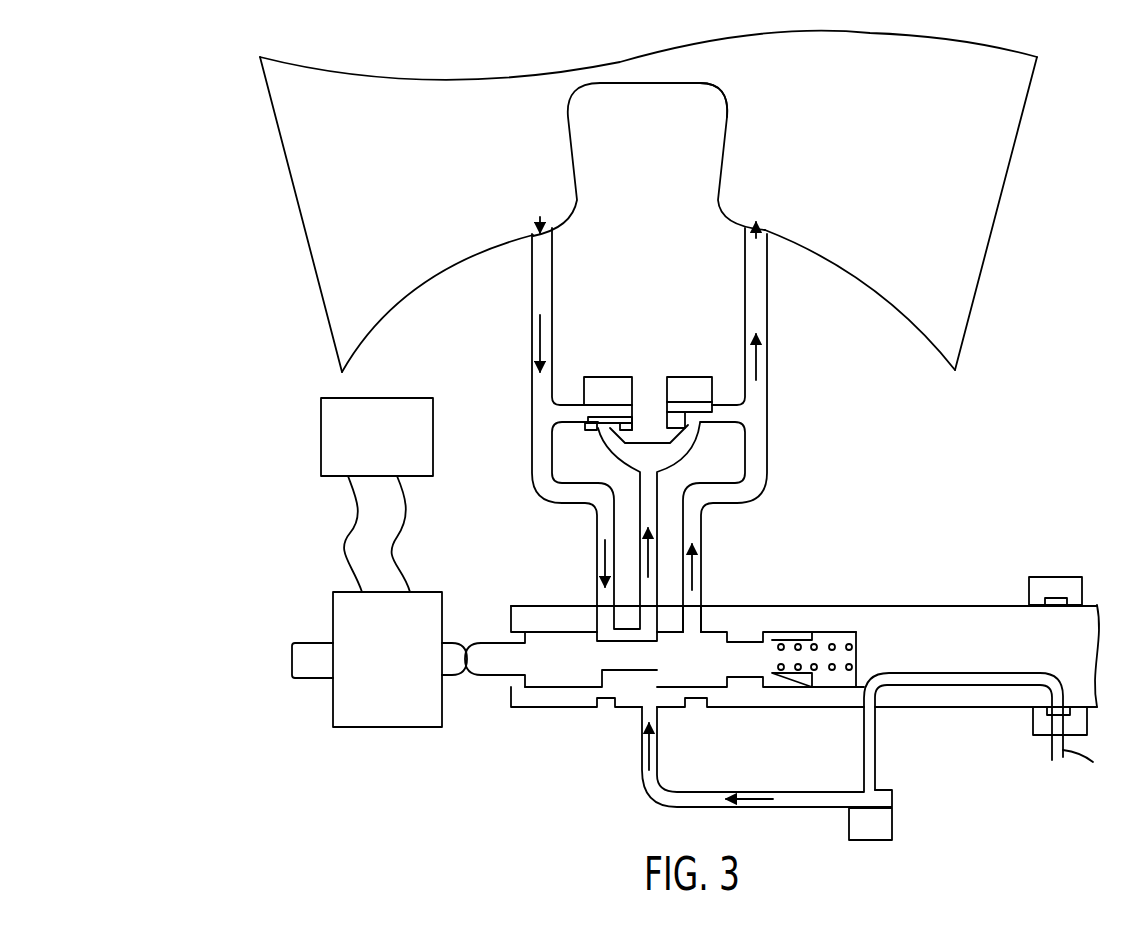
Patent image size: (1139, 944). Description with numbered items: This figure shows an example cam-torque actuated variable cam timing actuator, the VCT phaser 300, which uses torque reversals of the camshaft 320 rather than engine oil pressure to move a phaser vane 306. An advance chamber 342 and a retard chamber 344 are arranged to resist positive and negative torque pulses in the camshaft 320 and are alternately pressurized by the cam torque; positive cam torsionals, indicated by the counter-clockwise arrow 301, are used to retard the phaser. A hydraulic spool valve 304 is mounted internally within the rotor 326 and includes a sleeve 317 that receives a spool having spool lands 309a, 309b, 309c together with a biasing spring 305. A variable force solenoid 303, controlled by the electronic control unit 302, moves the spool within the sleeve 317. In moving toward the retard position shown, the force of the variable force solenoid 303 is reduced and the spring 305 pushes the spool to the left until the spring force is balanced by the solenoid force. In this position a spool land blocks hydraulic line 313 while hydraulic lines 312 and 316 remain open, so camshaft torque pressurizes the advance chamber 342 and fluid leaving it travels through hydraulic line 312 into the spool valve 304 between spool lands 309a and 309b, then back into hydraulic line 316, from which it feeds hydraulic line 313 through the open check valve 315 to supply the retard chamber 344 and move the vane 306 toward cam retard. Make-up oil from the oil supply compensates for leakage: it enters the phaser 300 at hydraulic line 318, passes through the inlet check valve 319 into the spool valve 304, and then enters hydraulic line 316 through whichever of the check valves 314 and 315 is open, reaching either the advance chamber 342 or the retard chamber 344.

The cam-torque actuated VCT phaser 300 is at (214, 127).
The counter-clockwise arrow 301 is at (696, 172).
The electronic control unit 302 is at (410, 398).
The variable force solenoid 303 is at (390, 727).
The hydraulic spool valve 304 is at (538, 605).
The biasing spring 305 is at (838, 640).
The phaser vane 306 is at (718, 115).
The spool land 309a is at (574, 674).
The spool land 309b is at (708, 674).
The spool land 309c is at (782, 637).
The hydraulic line 312 is at (538, 288).
The hydraulic line 313 is at (758, 308).
The check valve 314 is at (610, 385).
The check valve 315 is at (692, 385).
The hydraulic line 316 is at (688, 443).
The sleeve 317 is at (722, 615).
The hydraulic line 318 is at (930, 680).
The inlet check valve 319 is at (893, 828).
The camshaft 320 is at (1048, 582).
The rotor 326 is at (960, 610).
The advance chamber 342 is at (445, 224).
The retard chamber 344 is at (954, 266).